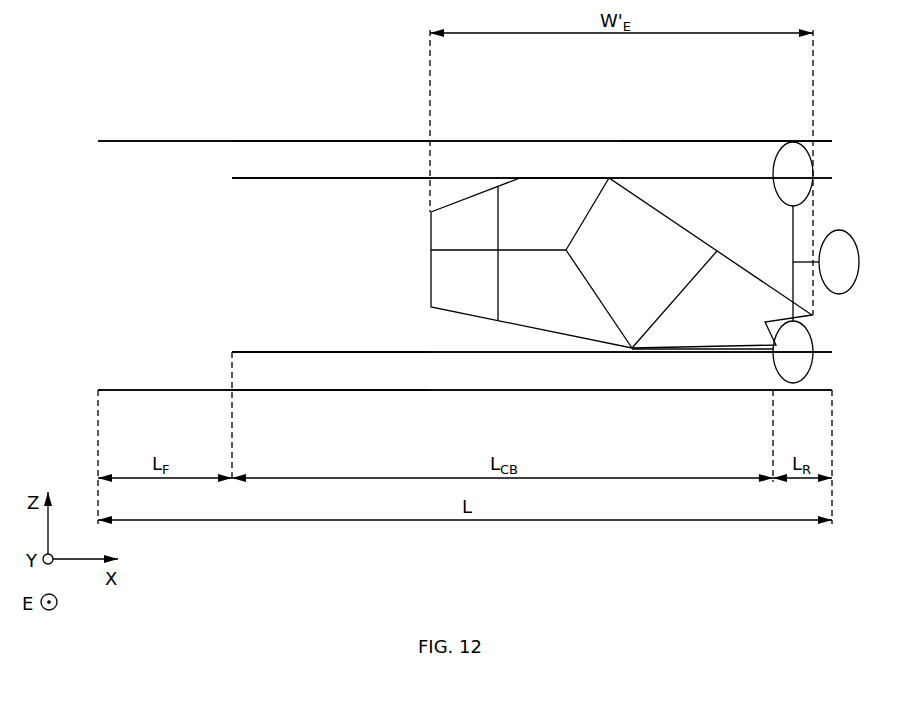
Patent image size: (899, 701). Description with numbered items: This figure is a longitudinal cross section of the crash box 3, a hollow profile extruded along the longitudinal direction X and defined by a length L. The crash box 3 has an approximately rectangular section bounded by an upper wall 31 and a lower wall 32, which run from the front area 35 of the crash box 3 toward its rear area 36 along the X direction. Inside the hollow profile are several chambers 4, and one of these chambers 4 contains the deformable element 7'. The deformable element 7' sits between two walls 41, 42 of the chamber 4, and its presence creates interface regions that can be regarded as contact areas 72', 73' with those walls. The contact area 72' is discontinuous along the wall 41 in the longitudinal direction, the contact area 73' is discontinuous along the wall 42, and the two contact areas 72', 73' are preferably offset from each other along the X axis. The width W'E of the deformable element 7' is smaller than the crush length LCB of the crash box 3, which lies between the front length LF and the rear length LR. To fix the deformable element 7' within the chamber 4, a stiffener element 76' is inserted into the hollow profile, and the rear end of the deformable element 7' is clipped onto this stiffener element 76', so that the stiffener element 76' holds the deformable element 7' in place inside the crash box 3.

The crash box 3 is at (110, 108).
The front area 35 is at (164, 130).
The upper wall 31 is at (355, 138).
The rear area 36 is at (726, 138).
The wall of the chamber 41 is at (410, 175).
The lower wall 32 is at (381, 393).
The wall of the chamber 42 is at (460, 355).
The chamber 4 is at (305, 201).
The deformable element 7' is at (625, 263).
The contact area 72' is at (564, 119).
The contact area 73' is at (702, 397).
The stiffener element 76' is at (823, 264).